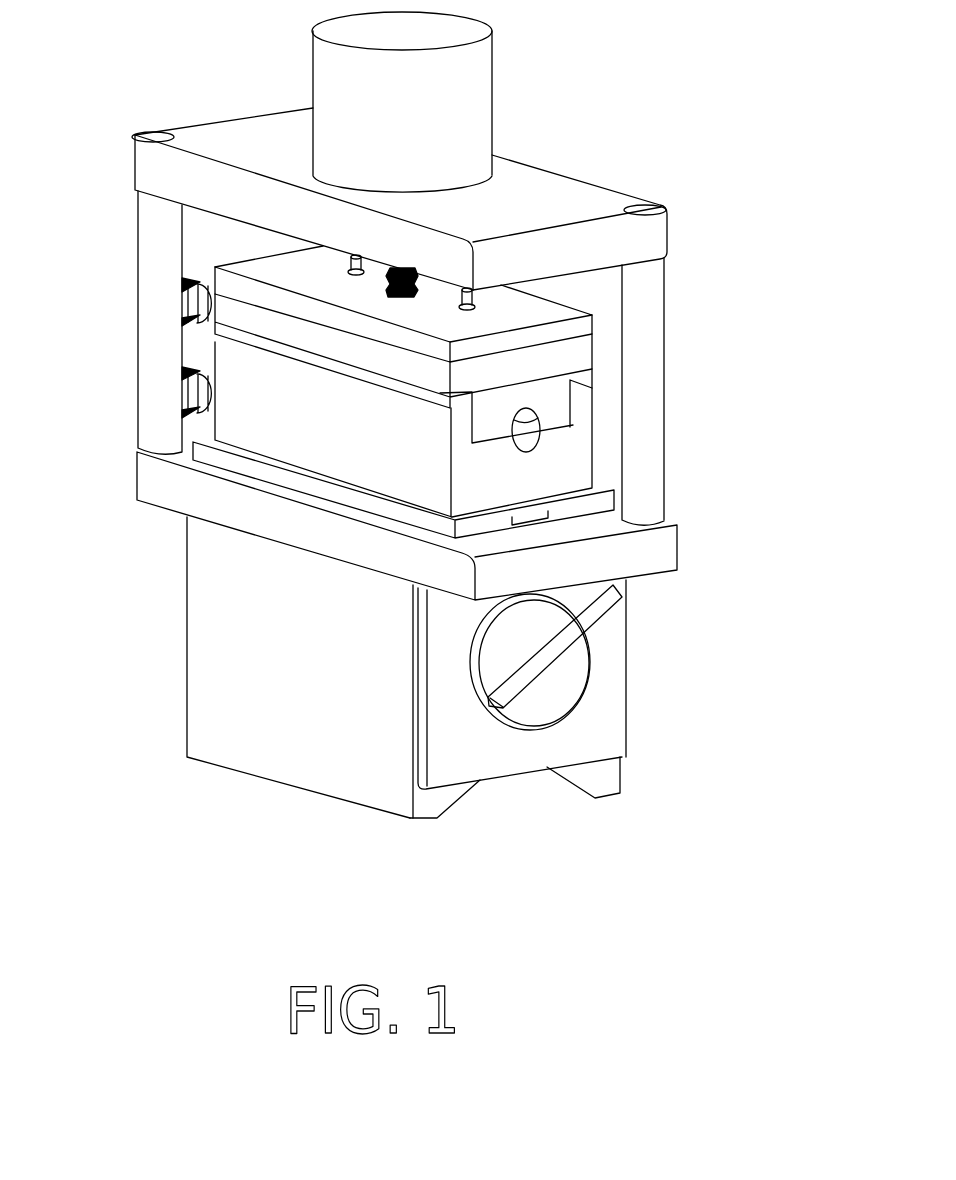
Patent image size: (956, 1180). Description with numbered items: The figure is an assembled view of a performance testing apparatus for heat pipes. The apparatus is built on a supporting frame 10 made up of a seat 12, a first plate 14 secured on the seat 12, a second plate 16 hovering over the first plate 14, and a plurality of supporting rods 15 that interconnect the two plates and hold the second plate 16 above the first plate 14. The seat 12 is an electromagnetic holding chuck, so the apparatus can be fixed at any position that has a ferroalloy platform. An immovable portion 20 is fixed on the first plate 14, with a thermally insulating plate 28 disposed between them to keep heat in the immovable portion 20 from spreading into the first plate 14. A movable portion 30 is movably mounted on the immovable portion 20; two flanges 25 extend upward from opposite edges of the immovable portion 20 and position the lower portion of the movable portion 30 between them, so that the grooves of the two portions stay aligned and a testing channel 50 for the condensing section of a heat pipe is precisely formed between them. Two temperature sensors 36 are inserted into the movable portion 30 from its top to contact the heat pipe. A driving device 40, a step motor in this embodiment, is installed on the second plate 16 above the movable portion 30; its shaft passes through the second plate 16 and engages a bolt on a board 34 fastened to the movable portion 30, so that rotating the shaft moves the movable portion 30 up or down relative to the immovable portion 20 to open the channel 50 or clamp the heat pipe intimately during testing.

The supporting frame 10 is at (793, 225).
The seat 12 is at (610, 700).
The first plate 14 is at (652, 557).
The supporting rods 15 is at (642, 427).
The second plate 16 is at (638, 242).
The immovable portion 20 is at (262, 410).
The flanges 25 is at (463, 428).
The thermally insulating plate 28 is at (210, 457).
The movable portion 30 is at (262, 322).
The board 34 is at (243, 285).
The temperature sensors 36 is at (290, 256).
The driving device 40 is at (360, 100).
The testing channel 50 is at (560, 430).